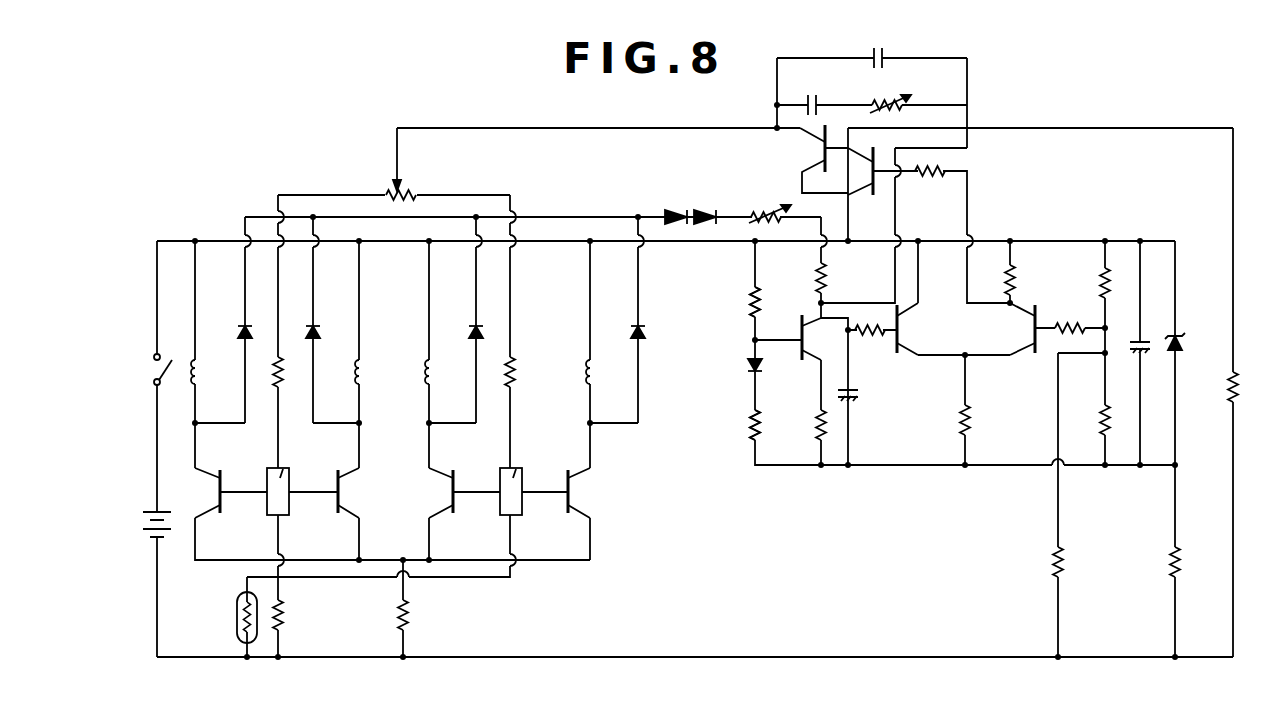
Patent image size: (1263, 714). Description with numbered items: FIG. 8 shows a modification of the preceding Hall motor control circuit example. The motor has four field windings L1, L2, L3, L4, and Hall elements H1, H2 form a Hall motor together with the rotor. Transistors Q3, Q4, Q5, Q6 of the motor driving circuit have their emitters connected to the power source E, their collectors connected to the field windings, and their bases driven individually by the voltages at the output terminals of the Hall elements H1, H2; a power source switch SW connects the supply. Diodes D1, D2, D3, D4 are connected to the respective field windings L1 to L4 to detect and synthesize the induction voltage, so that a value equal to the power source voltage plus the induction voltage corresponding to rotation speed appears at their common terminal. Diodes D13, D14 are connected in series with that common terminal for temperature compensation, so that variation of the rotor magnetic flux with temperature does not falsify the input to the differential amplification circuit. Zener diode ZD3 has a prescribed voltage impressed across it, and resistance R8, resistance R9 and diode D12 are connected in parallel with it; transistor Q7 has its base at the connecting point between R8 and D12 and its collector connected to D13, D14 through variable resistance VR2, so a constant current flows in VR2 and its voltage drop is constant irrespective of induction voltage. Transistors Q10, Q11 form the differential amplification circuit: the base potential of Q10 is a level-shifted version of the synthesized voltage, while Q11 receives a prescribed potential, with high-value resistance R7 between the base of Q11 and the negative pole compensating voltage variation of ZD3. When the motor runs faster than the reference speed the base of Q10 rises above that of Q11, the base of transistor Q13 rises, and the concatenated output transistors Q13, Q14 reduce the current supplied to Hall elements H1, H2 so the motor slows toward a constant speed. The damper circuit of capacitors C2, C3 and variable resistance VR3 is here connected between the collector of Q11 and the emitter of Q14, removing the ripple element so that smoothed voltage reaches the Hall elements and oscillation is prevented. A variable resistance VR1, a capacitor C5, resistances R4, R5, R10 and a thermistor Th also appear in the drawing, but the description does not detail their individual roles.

The power source switch SW is at (172, 357).
The power source E is at (160, 529).
The field winding L1 is at (205, 376).
The field winding L2 is at (441, 376).
The field winding L3 is at (370, 376).
The field winding L4 is at (601, 376).
The diode D1 is at (233, 335).
The diode D2 is at (465, 335).
The diode D3 is at (324, 335).
The diode D4 is at (649, 335).
The variable resistor VR1 is at (412, 164).
The variable resistance VR2 is at (770, 202).
The variable resistance VR3 is at (890, 92).
The diode D13 is at (680, 200).
The diode D14 is at (710, 200).
The capacitor C2 is at (882, 42).
The capacitor C3 is at (815, 91).
The capacitor C5 is at (859, 397).
The transistor Q14 is at (821, 159).
The transistor Q13 is at (858, 171).
The resistance R8 is at (767, 303).
The diode D12 is at (773, 367).
The resistance R9 is at (767, 427).
The transistor Q7 is at (819, 337).
The transistor Q10 is at (918, 298).
The transistor Q11 is at (1020, 329).
The resistor R5 is at (1116, 284).
The resistor R4 is at (1117, 422).
The Zener diode ZD3 is at (1190, 327).
The resistance R7 is at (1069, 563).
The resistor R10 is at (1190, 563).
The transistor Q3 is at (203, 493).
The transistor Q4 is at (355, 493).
The transistor Q5 is at (438, 493).
The transistor Q6 is at (585, 493).
The Hall element H1 is at (285, 478).
The Hall element H2 is at (518, 476).
The thermistor Th is at (236, 617).